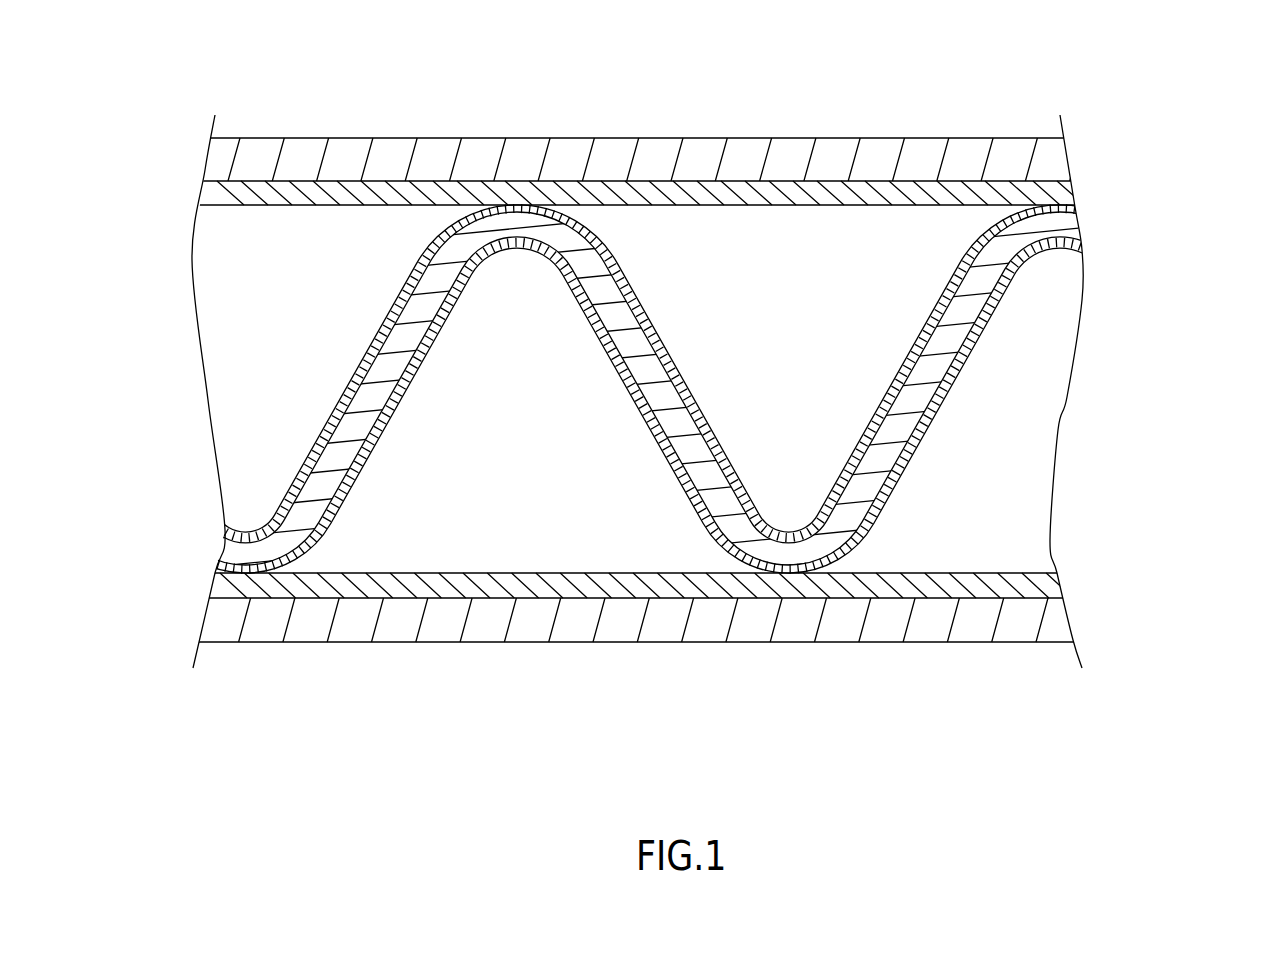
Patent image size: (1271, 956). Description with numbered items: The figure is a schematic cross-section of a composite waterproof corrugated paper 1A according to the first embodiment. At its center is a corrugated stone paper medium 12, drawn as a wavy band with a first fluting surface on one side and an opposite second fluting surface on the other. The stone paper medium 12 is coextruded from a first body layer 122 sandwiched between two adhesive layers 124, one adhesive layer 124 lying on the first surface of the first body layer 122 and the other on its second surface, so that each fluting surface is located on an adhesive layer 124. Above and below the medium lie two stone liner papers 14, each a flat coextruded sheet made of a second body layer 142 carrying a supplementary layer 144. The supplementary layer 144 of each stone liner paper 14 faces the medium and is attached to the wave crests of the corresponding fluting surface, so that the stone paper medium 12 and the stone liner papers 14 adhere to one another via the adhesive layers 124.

The composite waterproof corrugated paper 1A is at (164, 146).
The stone paper medium 12 is at (701, 361).
The first body layer 122 is at (948, 350).
The adhesive layer 124 is at (952, 308).
The stone liner paper 14 is at (635, 393).
The second body layer 142 is at (448, 160).
The supplementary layer 144 is at (383, 190).